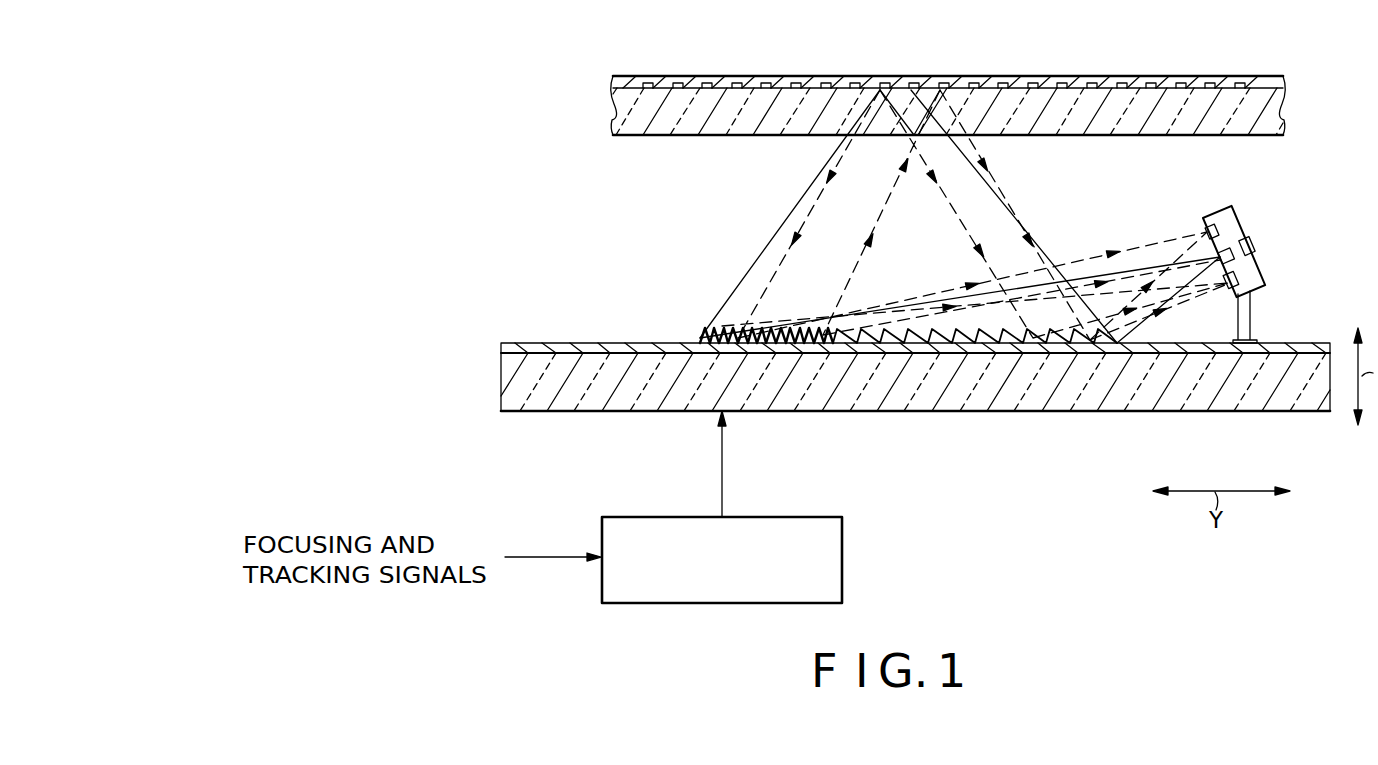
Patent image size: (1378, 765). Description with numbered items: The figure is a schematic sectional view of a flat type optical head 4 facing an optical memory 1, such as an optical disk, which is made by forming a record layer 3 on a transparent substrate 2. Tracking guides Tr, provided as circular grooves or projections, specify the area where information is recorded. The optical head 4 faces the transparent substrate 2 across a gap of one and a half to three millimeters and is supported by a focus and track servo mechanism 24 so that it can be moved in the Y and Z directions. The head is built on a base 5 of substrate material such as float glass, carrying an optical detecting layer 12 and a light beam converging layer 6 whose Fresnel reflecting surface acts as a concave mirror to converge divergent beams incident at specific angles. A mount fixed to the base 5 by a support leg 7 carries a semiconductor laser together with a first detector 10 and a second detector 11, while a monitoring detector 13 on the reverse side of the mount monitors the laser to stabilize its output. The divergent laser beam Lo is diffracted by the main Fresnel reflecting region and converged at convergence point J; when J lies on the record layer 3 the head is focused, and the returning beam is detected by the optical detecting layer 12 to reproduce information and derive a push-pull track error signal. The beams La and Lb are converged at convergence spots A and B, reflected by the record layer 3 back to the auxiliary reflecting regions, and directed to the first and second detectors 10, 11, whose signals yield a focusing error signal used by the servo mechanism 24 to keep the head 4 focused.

The optical memory 1 is at (967, 73).
The transparent substrate 2 is at (1284, 118).
The record layer 3 is at (1284, 86).
The convergence spot A is at (879, 83).
The convergence point J is at (906, 83).
The convergence spot B is at (933, 83).
The tracking guide Tr is at (1029, 83).
The flat type optical head 4 is at (1246, 274).
The base 5 is at (915, 365).
The light beam converging layer 6 is at (574, 342).
The support leg 7 is at (1251, 320).
The first detector 10 is at (1206, 228).
The second detector 11 is at (1231, 288).
The optical detecting layer 12 is at (735, 337).
The monitoring detector 13 is at (1250, 246).
The focus and track servo mechanism 24 is at (843, 563).
The laser beam Lo is at (765, 254).
The laser beam La is at (834, 168).
The laser beam Lb is at (994, 170).